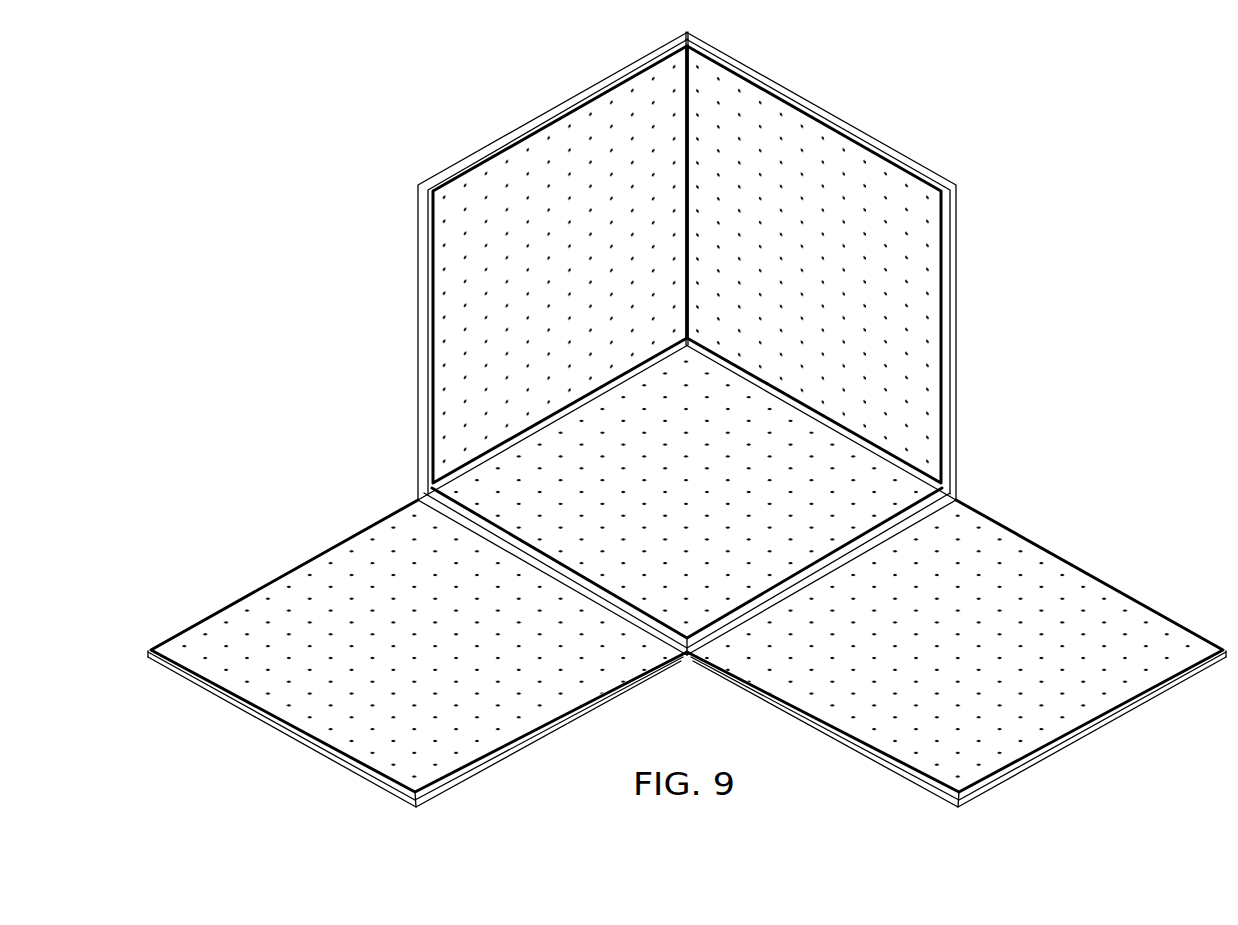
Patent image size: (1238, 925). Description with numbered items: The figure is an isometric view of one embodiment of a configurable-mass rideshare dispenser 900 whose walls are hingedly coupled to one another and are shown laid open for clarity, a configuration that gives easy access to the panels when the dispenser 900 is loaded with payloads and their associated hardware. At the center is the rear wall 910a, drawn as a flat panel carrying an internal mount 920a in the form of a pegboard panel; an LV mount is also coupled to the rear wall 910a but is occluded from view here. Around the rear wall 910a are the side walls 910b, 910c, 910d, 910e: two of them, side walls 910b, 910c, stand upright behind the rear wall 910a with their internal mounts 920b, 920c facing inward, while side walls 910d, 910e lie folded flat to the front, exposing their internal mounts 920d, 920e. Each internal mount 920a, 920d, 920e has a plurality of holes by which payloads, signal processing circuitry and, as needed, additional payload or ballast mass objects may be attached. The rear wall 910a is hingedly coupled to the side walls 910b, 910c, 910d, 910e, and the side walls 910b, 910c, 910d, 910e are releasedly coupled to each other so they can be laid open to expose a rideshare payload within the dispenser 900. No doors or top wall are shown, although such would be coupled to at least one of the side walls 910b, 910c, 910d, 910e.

The configurable-mass rideshare dispenser 900 is at (995, 123).
The rear wall 910a is at (934, 510).
The side wall 910b is at (418, 343).
The side wall 910c is at (957, 345).
The side wall 910d is at (282, 732).
The side wall 910e is at (1092, 732).
The internal mount 920a is at (462, 487).
The internal mount 920b is at (493, 170).
The internal mount 920c is at (812, 265).
The internal mount 920d is at (295, 578).
The internal mount 920e is at (1079, 578).